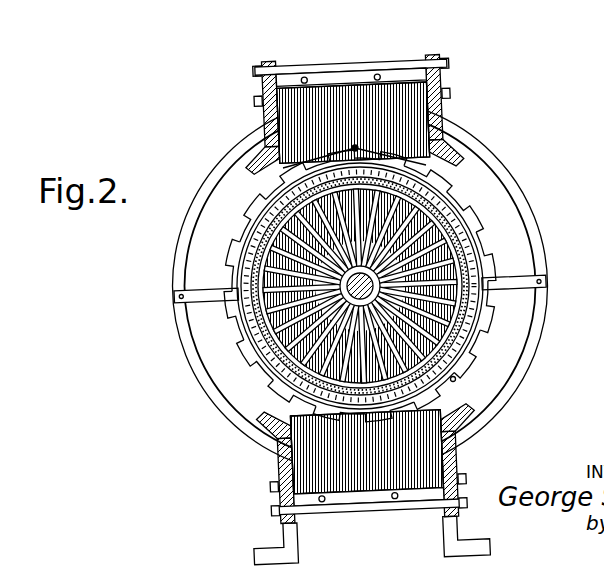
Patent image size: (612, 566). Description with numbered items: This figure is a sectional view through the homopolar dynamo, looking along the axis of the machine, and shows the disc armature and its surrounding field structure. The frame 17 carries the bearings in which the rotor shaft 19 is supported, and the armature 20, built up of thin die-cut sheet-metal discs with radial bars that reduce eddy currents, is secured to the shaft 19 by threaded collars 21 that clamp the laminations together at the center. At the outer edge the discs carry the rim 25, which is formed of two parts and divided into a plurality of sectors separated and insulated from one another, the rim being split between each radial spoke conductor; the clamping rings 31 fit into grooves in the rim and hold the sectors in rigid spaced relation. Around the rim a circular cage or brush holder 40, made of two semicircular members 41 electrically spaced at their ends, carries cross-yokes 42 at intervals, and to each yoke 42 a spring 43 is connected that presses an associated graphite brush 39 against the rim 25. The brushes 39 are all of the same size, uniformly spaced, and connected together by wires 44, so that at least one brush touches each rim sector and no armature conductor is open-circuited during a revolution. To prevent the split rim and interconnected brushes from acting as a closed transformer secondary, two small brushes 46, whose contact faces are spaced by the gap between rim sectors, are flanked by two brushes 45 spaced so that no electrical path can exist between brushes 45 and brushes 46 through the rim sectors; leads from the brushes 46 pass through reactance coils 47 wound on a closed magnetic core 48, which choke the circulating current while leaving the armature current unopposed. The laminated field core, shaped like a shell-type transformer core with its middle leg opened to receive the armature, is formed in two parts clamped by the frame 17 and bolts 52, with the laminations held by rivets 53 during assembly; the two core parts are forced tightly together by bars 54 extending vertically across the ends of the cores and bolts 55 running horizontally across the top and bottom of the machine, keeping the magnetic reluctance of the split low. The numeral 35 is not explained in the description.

The frame 17 is at (504, 182).
The rotor shaft 19 is at (250, 262).
The armature 20 is at (258, 211).
The threaded collars 21 is at (340, 291).
The rim 25 is at (450, 325).
The clamping rings 31 is at (437, 338).
The pole clamping ring 35 is at (480, 261).
The brushes 39 is at (476, 158).
The brush holder 40 is at (447, 373).
The semicircular members 41 is at (457, 365).
The cross-yokes 42 is at (250, 238).
The spring 43 is at (467, 248).
The wires 44 is at (485, 310).
The brushes 45 is at (432, 188).
The small brushes 46 is at (400, 155).
The reactance coils 47 is at (347, 140).
The core 48 is at (442, 85).
The bolts 52 is at (403, 56).
The rivets 53 is at (260, 444).
The bars 54 is at (312, 66).
The bolts 55 is at (368, 66).